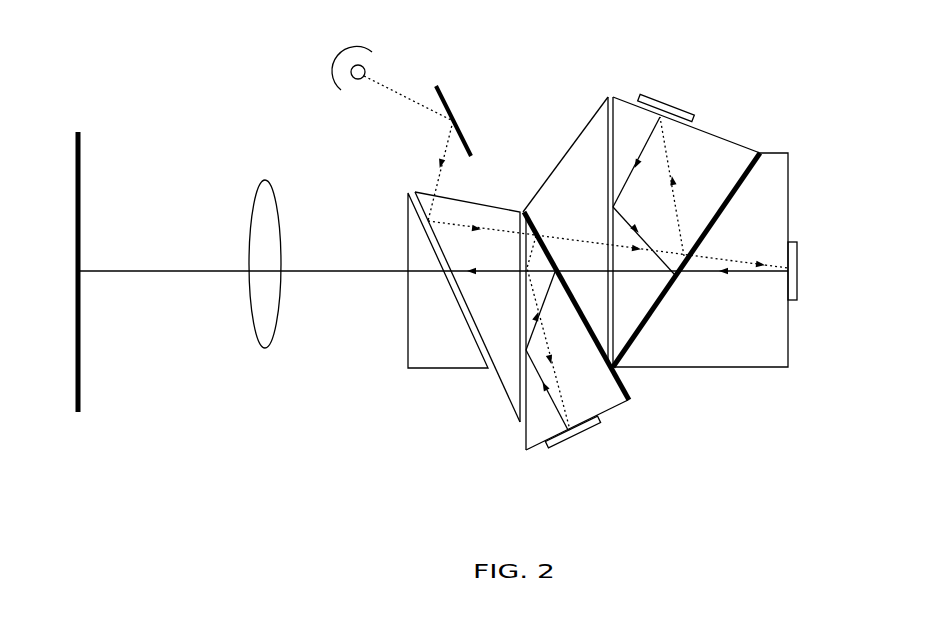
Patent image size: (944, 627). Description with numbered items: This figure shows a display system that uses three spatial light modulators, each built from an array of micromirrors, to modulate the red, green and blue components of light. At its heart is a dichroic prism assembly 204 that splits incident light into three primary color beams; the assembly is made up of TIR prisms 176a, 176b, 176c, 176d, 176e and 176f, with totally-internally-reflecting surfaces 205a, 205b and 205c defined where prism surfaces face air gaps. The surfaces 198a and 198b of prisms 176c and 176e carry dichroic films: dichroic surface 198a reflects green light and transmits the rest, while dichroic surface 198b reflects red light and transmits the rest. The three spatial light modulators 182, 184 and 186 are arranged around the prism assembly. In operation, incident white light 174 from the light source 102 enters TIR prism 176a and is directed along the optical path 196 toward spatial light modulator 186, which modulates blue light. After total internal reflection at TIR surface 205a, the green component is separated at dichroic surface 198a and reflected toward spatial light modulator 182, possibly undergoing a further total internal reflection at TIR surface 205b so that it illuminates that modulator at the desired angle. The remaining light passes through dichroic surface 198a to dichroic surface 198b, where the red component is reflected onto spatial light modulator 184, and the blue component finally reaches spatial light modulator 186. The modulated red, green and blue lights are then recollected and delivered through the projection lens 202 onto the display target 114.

The display target 114 is at (80, 152).
The optical axis 196 is at (366, 267).
The projection lens 202 is at (265, 180).
The light source 102 is at (379, 40).
The incident white light 174 is at (409, 130).
The TIR prism 176a is at (471, 362).
The prism 176b is at (518, 317).
The TIR prism 176c is at (620, 404).
The TIR prism 176d is at (603, 208).
The TIR prism 176e is at (738, 175).
The TIR prism 176f is at (766, 362).
The spatial light modulator 182 is at (614, 457).
The spatial light modulator 184 is at (691, 100).
The spatial light modulator 186 is at (841, 283).
The dichroic surface 198a is at (633, 390).
The dichroic surface 198b is at (753, 168).
The dichroic prism assembly 204 is at (596, 112).
The TIR surface 205a is at (510, 403).
The TIR surface 205b is at (527, 447).
The TIR surface 205c is at (617, 100).